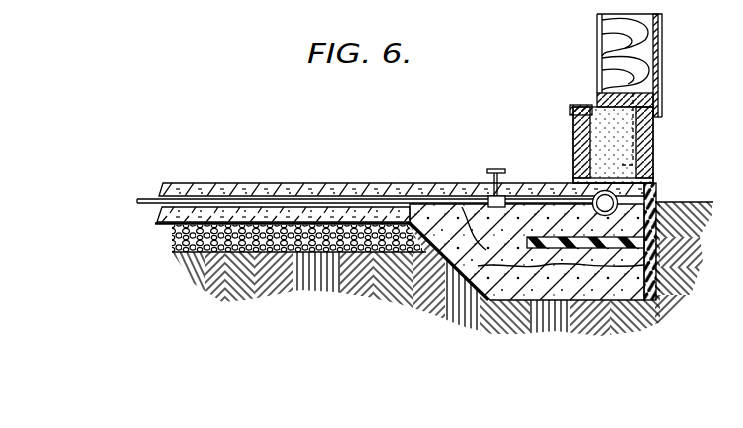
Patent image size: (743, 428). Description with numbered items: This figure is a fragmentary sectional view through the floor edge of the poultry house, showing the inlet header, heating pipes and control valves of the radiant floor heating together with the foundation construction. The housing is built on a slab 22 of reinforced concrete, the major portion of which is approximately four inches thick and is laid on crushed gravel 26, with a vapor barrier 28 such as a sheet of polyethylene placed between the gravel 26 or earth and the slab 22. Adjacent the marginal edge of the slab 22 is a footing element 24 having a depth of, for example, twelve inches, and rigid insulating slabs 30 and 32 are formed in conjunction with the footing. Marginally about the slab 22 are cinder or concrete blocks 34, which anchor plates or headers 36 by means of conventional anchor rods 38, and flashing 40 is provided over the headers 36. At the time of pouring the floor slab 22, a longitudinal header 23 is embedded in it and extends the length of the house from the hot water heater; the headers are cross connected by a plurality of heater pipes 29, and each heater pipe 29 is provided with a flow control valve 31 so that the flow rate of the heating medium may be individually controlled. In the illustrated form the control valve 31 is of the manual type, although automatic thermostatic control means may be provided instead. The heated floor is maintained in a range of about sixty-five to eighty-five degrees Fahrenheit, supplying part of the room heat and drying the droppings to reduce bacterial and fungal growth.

The slab 22 is at (346, 181).
The longitudinal header 23 is at (586, 195).
The footing element 24 is at (662, 190).
The crushed gravel 26 is at (186, 253).
The vapor barrier membrane 28 is at (157, 225).
The heater pipe 29 is at (150, 196).
The rigid insulating slab 30 is at (652, 267).
The flow control valve 31 is at (488, 185).
The rigid insulating slab 32 is at (563, 200).
The cinder or concrete block 34 is at (655, 143).
The plate or header 36 is at (656, 102).
The anchor rod 38 is at (593, 109).
The flashing 40 is at (649, 98).